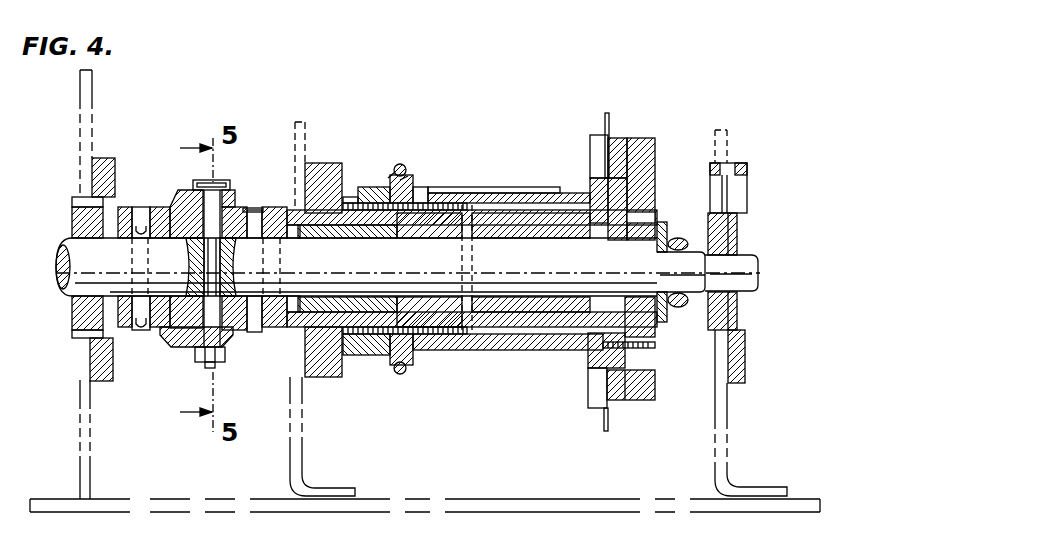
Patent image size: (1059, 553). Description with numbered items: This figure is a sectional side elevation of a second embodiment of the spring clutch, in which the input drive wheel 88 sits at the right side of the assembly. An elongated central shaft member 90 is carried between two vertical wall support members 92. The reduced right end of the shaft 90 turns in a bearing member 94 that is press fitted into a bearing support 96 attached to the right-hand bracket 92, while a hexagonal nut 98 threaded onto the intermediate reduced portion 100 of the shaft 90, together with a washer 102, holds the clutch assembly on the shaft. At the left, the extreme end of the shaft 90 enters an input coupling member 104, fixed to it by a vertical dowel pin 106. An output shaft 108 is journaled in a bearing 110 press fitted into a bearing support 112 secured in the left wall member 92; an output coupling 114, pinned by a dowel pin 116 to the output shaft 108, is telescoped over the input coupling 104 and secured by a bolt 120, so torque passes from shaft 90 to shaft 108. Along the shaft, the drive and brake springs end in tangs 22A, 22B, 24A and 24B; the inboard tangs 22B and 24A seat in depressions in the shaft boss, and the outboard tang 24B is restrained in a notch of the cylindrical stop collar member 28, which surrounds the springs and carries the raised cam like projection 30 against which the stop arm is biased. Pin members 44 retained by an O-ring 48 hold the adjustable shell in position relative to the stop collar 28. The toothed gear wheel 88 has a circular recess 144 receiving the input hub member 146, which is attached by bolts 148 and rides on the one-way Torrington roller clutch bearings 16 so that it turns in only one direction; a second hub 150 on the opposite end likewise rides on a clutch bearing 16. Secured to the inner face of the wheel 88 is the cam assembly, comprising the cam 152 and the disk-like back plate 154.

The Torrington roller clutch bearings 16 is at (553, 322).
The drive spring tang 22A is at (358, 188).
The drive spring inboard tang 22B is at (460, 196).
The brake spring inboard tang 24A is at (472, 192).
The brake spring outboard tang 24B is at (592, 200).
The stop collar member 28 is at (486, 197).
The cam like projection 30 is at (514, 186).
The pin members 44 is at (392, 182).
The O-ring 48 is at (402, 168).
The input drive wheel 88 is at (647, 168).
The elongated central shaft member 90 is at (630, 276).
The vertical wall support members 92 is at (72, 423).
The bearing member 94 is at (712, 244).
The bearing support 96 is at (743, 334).
The hexagonal nut 98 is at (664, 310).
The intermediate reduced portion 100 is at (695, 278).
The washer 102 is at (661, 302).
The input coupling member 104 is at (235, 327).
The dowel pin 106 is at (255, 218).
The output shaft 108 is at (77, 260).
The bearing 110 is at (74, 213).
The bearing support 112 is at (100, 376).
The output coupling 114 is at (176, 208).
The dowel pin 116 is at (143, 340).
The bolt 120 is at (218, 184).
The circular recess 144 is at (616, 162).
The input hub member 146 is at (613, 197).
The bolts 148 is at (628, 370).
The hub 150 is at (322, 368).
The cam 152 is at (590, 148).
The back plate 154 is at (607, 112).